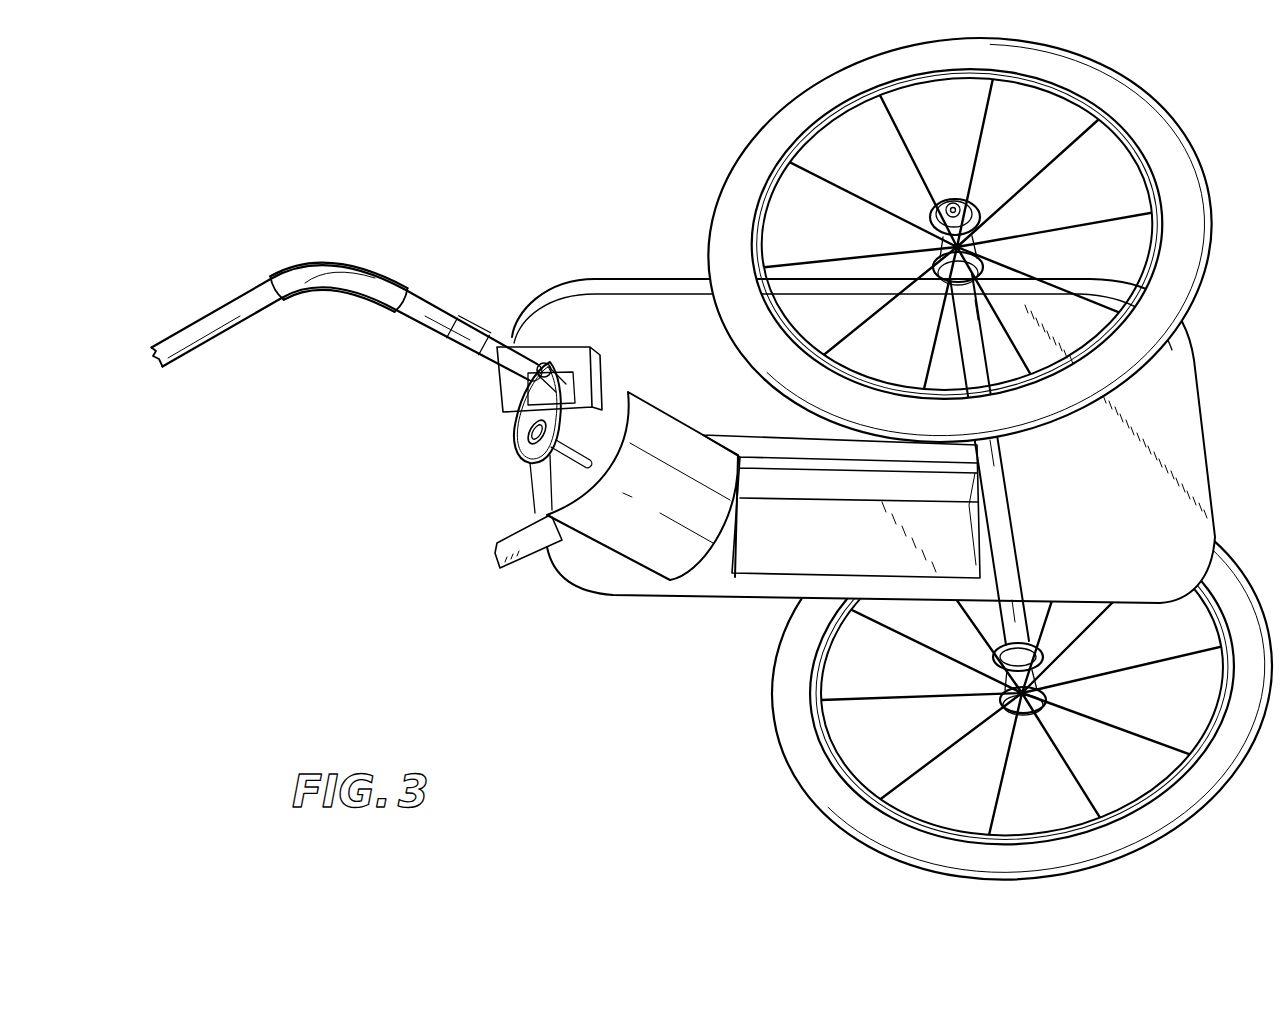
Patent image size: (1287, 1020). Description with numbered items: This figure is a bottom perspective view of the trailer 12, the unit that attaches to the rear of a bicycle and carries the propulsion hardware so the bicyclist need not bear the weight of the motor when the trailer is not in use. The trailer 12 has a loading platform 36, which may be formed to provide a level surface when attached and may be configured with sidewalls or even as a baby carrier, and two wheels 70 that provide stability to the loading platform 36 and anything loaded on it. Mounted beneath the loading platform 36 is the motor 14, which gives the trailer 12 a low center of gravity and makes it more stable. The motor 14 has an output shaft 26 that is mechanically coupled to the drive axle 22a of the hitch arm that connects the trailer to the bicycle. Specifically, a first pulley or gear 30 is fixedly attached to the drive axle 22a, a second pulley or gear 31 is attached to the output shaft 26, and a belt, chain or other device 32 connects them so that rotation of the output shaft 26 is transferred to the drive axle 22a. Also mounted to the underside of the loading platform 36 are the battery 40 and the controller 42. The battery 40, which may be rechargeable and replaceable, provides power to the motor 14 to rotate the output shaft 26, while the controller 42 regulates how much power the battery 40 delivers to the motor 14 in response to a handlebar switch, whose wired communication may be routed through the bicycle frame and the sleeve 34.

The trailer 12 is at (642, 743).
The motor 14 is at (622, 530).
The drive axle 22a is at (514, 368).
The output shaft 26 is at (528, 478).
The first pulley or gear 30 is at (518, 420).
The second pulley or gear 31 is at (593, 382).
The belt, chain or other device 32 is at (573, 370).
The sleeve 34 is at (463, 321).
The loading platform 36 is at (665, 279).
The battery 40 is at (822, 570).
The controller 42 is at (783, 555).
The wheels 70 is at (832, 790).